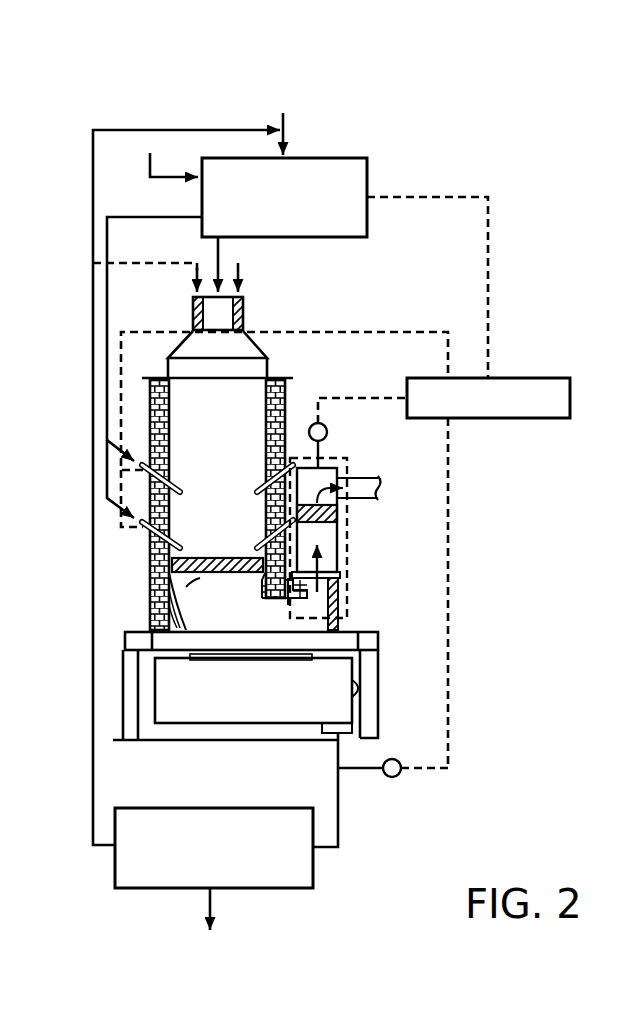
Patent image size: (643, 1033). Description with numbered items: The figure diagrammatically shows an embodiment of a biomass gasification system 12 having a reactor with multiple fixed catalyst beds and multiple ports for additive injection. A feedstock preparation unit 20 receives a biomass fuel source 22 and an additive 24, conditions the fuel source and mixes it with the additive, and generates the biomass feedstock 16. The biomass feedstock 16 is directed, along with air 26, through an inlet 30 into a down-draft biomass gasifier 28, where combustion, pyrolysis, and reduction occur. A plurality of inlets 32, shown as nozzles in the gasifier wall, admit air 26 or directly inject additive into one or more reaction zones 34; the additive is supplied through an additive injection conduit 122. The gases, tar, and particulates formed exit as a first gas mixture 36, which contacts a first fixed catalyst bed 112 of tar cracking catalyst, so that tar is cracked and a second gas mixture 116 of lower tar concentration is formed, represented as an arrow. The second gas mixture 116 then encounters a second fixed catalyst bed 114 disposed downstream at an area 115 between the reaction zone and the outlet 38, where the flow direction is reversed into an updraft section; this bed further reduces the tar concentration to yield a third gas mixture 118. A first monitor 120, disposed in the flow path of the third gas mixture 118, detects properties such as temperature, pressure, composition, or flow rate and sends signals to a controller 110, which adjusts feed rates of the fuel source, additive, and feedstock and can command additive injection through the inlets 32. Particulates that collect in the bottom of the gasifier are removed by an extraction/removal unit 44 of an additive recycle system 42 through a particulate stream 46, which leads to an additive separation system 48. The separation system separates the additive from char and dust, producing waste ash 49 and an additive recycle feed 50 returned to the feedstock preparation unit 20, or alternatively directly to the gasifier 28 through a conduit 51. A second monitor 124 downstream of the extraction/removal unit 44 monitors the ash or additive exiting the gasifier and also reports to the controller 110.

The biomass gasification system 12 is at (432, 133).
The biomass feedstock 16 is at (215, 255).
The feedstock preparation unit 20 is at (352, 158).
The biomass fuel source 22 is at (157, 158).
The additive 24 is at (287, 116).
The air 26 is at (245, 268).
The biomass gasifier 28 is at (352, 313).
The inlet 30 is at (246, 314).
The inlets 32 is at (140, 535).
The reaction zones 34 is at (178, 512).
The first gas mixture 36 is at (218, 553).
The outlet 38 is at (355, 478).
The additive recycle system 42 is at (408, 829).
The extraction/removal unit 44 is at (252, 726).
The particulate stream 46 is at (340, 806).
The additive separation system 48 is at (213, 808).
The ash 49 is at (208, 905).
The additive recycle feed 50 is at (95, 768).
The conduit 51 is at (150, 264).
The controller 110 is at (488, 420).
The first fixed catalyst bed 112 is at (152, 598).
The second fixed catalyst bed 114 is at (325, 527).
The area 115 is at (347, 600).
The second gas mixture 116 is at (320, 562).
The third gas mixture 118 is at (325, 468).
The first monitor 120 is at (321, 422).
The additive injection conduit 122 is at (102, 451).
The second monitor 124 is at (397, 759).